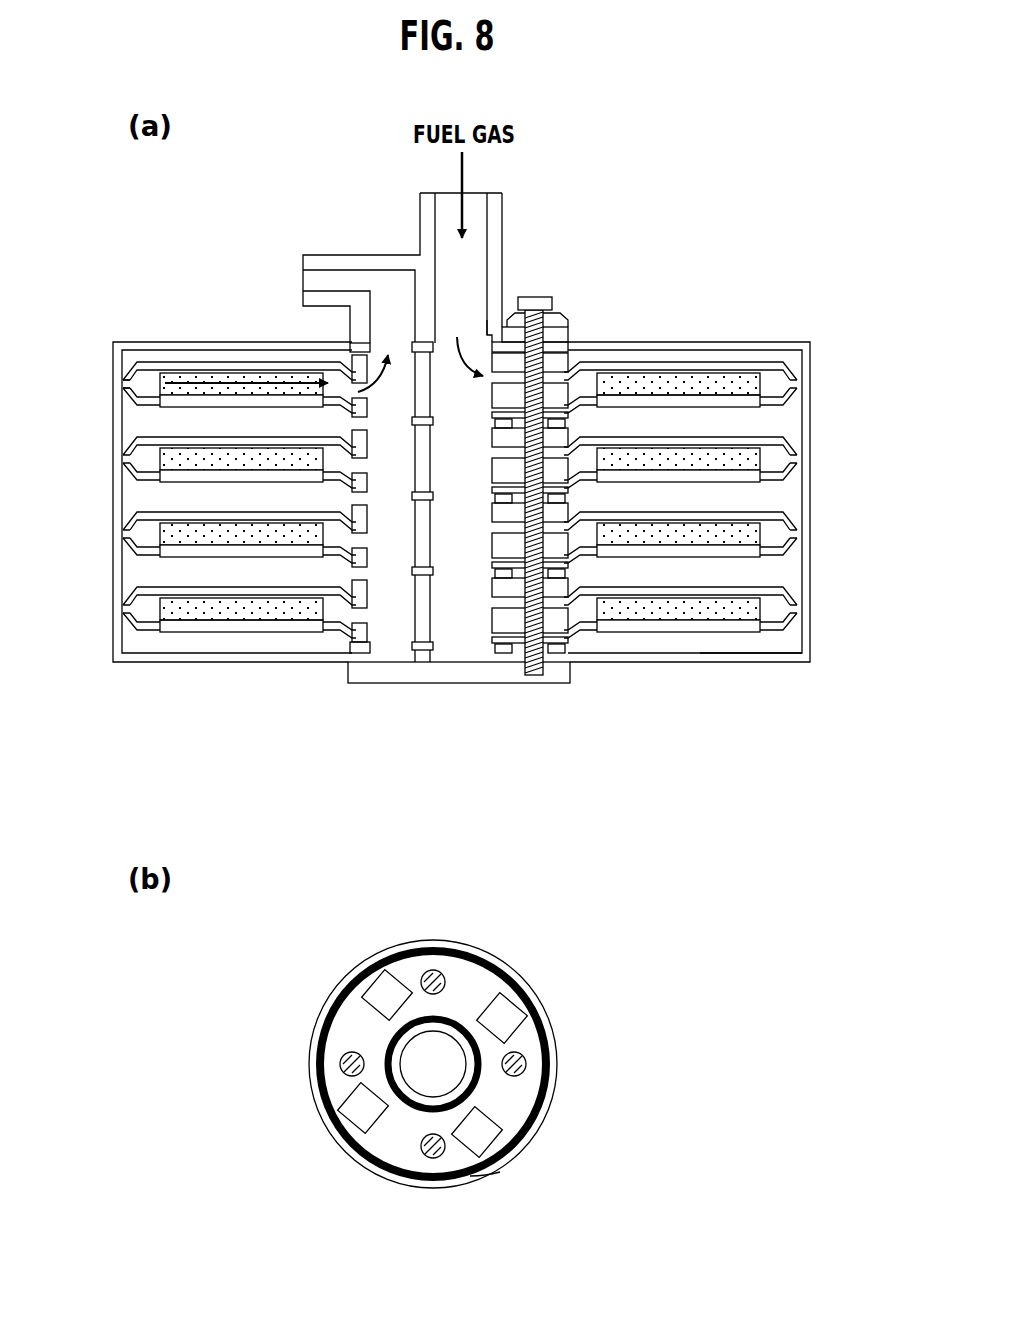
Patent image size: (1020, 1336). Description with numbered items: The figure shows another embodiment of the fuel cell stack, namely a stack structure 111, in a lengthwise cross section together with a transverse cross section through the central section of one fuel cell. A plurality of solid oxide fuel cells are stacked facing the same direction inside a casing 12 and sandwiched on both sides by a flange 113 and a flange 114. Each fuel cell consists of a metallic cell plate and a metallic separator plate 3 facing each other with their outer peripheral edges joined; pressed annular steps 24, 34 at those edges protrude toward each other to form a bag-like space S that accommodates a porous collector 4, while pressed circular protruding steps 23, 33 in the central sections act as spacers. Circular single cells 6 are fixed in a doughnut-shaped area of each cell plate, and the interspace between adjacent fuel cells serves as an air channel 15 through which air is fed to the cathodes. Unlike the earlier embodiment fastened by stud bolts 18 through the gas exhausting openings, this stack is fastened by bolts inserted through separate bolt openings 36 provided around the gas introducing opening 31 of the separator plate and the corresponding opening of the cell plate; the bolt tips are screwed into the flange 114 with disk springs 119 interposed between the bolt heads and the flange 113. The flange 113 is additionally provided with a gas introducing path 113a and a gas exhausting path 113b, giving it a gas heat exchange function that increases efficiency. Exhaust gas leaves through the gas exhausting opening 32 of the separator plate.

The separator plate 3 is at (680, 483).
The collector 4 is at (258, 607).
The single cell 6 is at (735, 647).
The casing 12 is at (190, 662).
The air channel 15 is at (460, 500).
The stud bolt 18 is at (433, 1152).
The circular protruding step 23 is at (348, 646).
The annular step 24 is at (130, 392).
The gas introducing opening 31 is at (472, 340).
The gas exhausting opening 32 is at (380, 348).
The circular protruding step 33 is at (348, 355).
The annular step 34 is at (128, 378).
The bolt opening 36 is at (563, 331).
The stack structure 111 is at (622, 182).
The flange 113 is at (440, 243).
The gas introducing path 113a is at (451, 205).
The gas exhausting path 113b is at (385, 293).
The flange 114 is at (392, 672).
The disk spring 119 is at (560, 315).
The space S is at (680, 537).